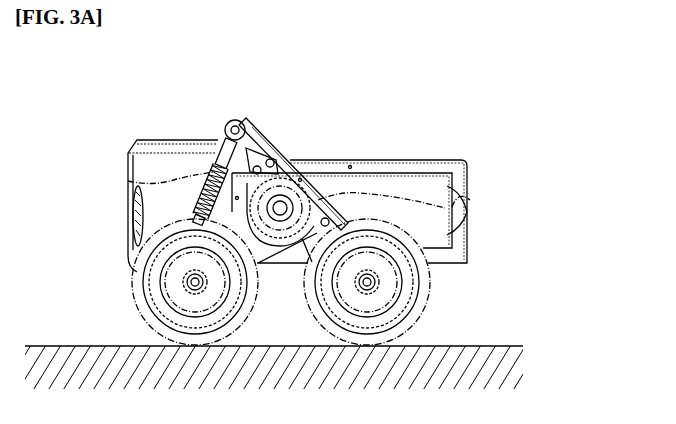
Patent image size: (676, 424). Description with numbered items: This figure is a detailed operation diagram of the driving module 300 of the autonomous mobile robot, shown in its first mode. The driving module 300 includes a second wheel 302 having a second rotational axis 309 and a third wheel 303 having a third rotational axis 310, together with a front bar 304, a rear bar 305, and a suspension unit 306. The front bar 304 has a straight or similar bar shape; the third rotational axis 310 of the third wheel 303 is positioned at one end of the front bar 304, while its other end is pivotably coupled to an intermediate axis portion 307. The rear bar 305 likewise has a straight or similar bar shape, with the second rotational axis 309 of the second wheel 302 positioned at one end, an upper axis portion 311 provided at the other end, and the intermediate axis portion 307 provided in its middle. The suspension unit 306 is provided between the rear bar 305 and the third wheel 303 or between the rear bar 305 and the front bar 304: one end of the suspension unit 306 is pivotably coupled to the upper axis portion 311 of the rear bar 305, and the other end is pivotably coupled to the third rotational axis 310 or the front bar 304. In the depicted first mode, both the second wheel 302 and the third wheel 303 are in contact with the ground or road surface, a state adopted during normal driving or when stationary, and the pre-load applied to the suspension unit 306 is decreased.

The driving module 300 is at (364, 101).
The second wheel 302 is at (405, 304).
The third wheel 303 is at (162, 302).
The front bar 304 is at (143, 217).
The rear bar 305 is at (264, 140).
The suspension unit 306 is at (128, 181).
The intermediate axis portion 307 is at (470, 200).
The second rotational axis 309 is at (380, 282).
The third rotational axis 310 is at (192, 282).
The upper axis portion 311 is at (227, 124).